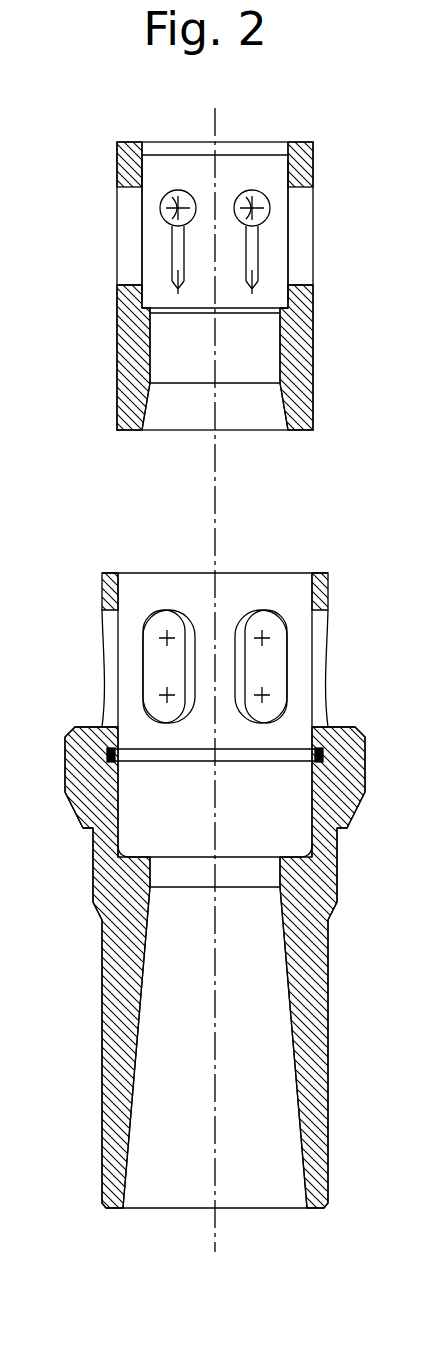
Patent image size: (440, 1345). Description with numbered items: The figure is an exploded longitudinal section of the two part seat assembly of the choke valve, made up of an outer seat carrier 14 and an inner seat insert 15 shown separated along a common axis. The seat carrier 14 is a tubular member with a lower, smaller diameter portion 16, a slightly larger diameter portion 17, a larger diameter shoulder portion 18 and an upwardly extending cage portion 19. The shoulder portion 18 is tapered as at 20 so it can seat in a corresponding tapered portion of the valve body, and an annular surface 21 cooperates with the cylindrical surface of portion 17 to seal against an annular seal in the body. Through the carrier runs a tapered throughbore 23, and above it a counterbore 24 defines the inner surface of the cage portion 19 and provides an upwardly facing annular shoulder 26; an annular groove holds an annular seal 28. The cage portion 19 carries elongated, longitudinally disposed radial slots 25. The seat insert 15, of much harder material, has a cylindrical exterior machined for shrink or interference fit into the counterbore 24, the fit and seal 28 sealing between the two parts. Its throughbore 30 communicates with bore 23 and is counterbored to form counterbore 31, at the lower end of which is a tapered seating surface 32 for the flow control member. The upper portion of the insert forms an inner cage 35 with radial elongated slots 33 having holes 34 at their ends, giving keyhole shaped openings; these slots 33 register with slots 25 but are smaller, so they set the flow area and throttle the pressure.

The outer seat carrier 14 is at (334, 1015).
The inner seat insert 15 is at (320, 371).
The lower smaller diameter portion 16 is at (323, 1102).
The slightly larger diameter portion 17 is at (333, 890).
The shoulder portion 18 is at (353, 763).
The cage portion 19 is at (280, 585).
The tapered portion 20 is at (352, 813).
The annular surface 21 is at (343, 845).
The throughbore 23 is at (233, 1042).
The counterbore 24 is at (146, 836).
The elongated slots 25 is at (162, 663).
The annular shoulder 26 is at (300, 857).
The annular seal 28 is at (112, 756).
The throughbore 30 is at (172, 366).
The counterbore 31 is at (172, 184).
The tapered seating surface 32 is at (240, 310).
The elongated slots 33 is at (132, 258).
The holes 34 is at (132, 200).
The inner cage 35 is at (233, 170).